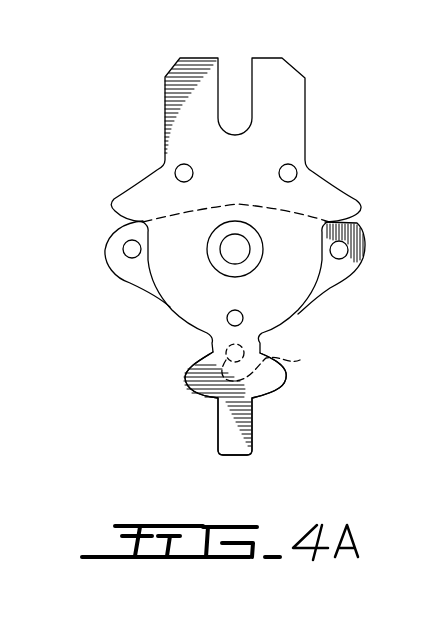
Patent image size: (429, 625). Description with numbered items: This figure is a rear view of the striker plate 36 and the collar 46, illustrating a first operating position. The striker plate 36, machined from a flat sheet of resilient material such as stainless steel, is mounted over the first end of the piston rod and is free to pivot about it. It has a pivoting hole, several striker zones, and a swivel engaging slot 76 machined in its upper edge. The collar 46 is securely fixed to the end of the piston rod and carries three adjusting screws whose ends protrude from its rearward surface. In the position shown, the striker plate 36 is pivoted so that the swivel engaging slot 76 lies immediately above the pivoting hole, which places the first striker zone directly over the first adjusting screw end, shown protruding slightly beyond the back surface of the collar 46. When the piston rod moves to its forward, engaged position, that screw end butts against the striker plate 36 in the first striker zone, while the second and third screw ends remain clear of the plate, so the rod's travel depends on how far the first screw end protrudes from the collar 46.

The striker plate 36 is at (305, 116).
The swivel engaging slot 76 is at (236, 85).
The collar 46 is at (200, 335).